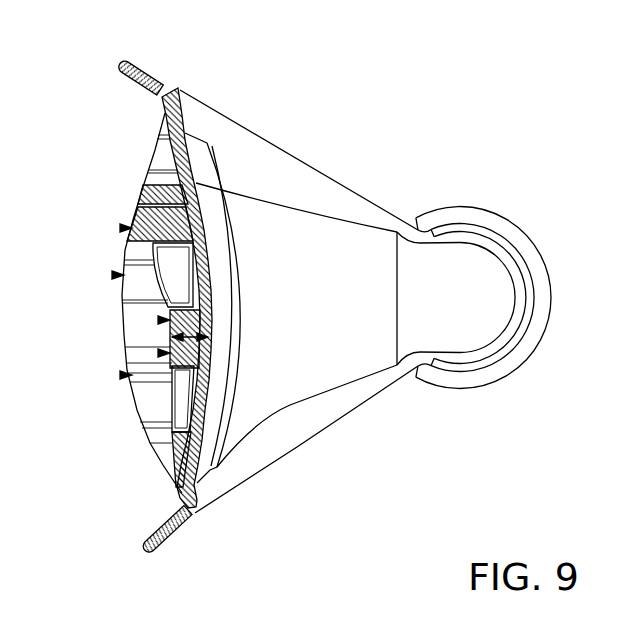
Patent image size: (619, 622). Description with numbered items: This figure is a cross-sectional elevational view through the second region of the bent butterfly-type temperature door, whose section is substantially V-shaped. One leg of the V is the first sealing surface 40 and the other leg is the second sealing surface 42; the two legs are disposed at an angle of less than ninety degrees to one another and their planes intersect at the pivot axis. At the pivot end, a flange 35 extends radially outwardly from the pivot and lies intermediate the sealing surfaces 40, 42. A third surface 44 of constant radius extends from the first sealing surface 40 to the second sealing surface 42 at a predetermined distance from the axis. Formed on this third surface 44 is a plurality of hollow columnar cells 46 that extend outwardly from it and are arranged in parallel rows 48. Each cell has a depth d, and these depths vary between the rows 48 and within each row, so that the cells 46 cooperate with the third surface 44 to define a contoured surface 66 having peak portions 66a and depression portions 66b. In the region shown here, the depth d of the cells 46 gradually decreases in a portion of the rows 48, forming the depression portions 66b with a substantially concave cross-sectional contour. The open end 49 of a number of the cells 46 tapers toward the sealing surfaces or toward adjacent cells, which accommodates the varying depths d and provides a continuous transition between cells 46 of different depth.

The flange 35 is at (342, 355).
The first sealing surface 40 is at (148, 548).
The second sealing surface 42 is at (142, 66).
The third surface 44 is at (147, 211).
The hollow columnar cells 46 is at (158, 320).
The rows 48 is at (145, 185).
The open end 49 is at (170, 338).
The contoured surface 66 is at (120, 375).
The peak portions 66a is at (158, 320).
The depression portions 66b is at (172, 440).
The depth d is at (183, 337).